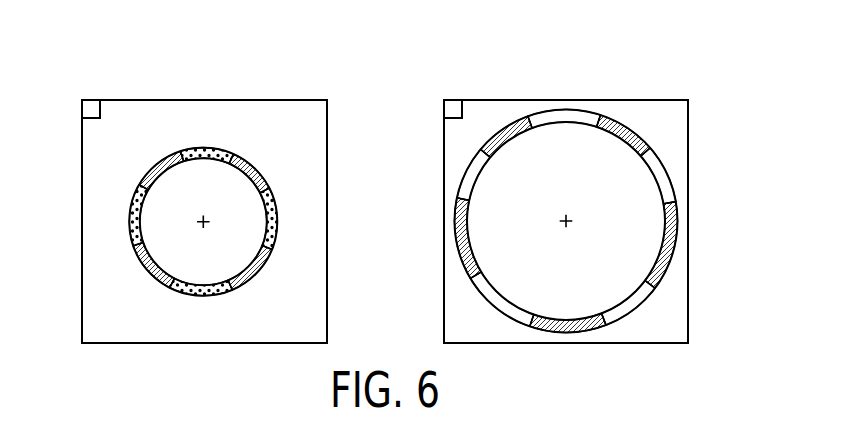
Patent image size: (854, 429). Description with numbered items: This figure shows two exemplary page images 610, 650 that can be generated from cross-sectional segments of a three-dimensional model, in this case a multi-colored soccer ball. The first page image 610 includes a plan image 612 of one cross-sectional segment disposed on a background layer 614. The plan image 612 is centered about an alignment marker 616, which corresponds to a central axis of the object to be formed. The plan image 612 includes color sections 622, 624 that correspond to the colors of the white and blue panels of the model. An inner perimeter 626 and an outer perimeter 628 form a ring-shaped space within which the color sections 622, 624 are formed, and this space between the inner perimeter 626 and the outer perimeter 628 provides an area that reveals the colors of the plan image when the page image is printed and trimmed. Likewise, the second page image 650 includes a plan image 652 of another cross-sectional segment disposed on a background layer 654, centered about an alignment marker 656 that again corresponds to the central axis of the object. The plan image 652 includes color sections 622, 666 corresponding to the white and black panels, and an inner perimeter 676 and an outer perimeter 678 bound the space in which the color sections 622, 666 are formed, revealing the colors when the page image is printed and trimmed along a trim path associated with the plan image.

The page image 610 is at (226, 78).
The plan image 612 is at (126, 167).
The background layer 614 is at (162, 115).
The alignment marker 616 is at (218, 202).
The color section 622 is at (155, 172).
The color section 624 is at (130, 218).
The inner perimeter 626 is at (263, 233).
The outer perimeter 628 is at (278, 235).
The page image 650 is at (607, 82).
The plan image 652 is at (487, 115).
The background layer 654 is at (457, 133).
The alignment marker 656 is at (586, 209).
The color section 666 is at (570, 122).
The inner perimeter 676 is at (663, 205).
The outer perimeter 678 is at (675, 212).